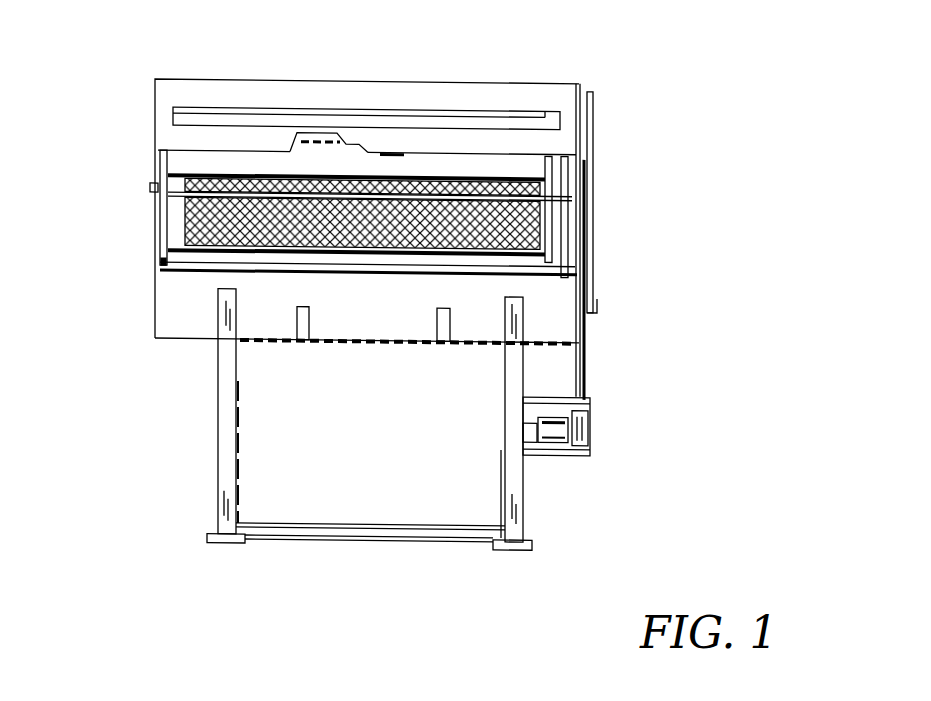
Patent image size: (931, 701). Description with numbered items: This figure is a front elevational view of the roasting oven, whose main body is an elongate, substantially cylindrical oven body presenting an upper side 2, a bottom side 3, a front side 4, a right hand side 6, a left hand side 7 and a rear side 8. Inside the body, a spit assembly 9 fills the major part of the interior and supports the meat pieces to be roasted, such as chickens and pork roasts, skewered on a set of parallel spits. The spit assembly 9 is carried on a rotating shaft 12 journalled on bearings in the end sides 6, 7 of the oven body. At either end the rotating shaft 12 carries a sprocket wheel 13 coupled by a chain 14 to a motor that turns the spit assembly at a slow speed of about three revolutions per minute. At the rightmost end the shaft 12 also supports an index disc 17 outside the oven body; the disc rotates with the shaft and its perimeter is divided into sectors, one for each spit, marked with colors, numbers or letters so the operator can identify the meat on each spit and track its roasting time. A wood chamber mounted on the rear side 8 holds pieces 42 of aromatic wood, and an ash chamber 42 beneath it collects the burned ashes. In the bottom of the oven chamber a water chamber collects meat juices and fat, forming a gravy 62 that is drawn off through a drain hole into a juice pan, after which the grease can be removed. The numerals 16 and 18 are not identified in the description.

The upper side 2 is at (244, 80).
The bottom side 3 is at (310, 280).
The front side 4 is at (347, 141).
The right hand side 6 is at (582, 104).
The left hand side 7 is at (153, 243).
The rear side 8 is at (454, 407).
The spit assembly 9 is at (190, 262).
The rotating shaft 12 is at (183, 173).
The sprocket wheel 13 is at (585, 175).
The chain 14 is at (582, 374).
The drive box 16 is at (586, 432).
The index disc 17 is at (594, 300).
The cover plate 18 is at (210, 108).
The ash chamber 42 is at (220, 240).
The gravy 62 is at (305, 322).